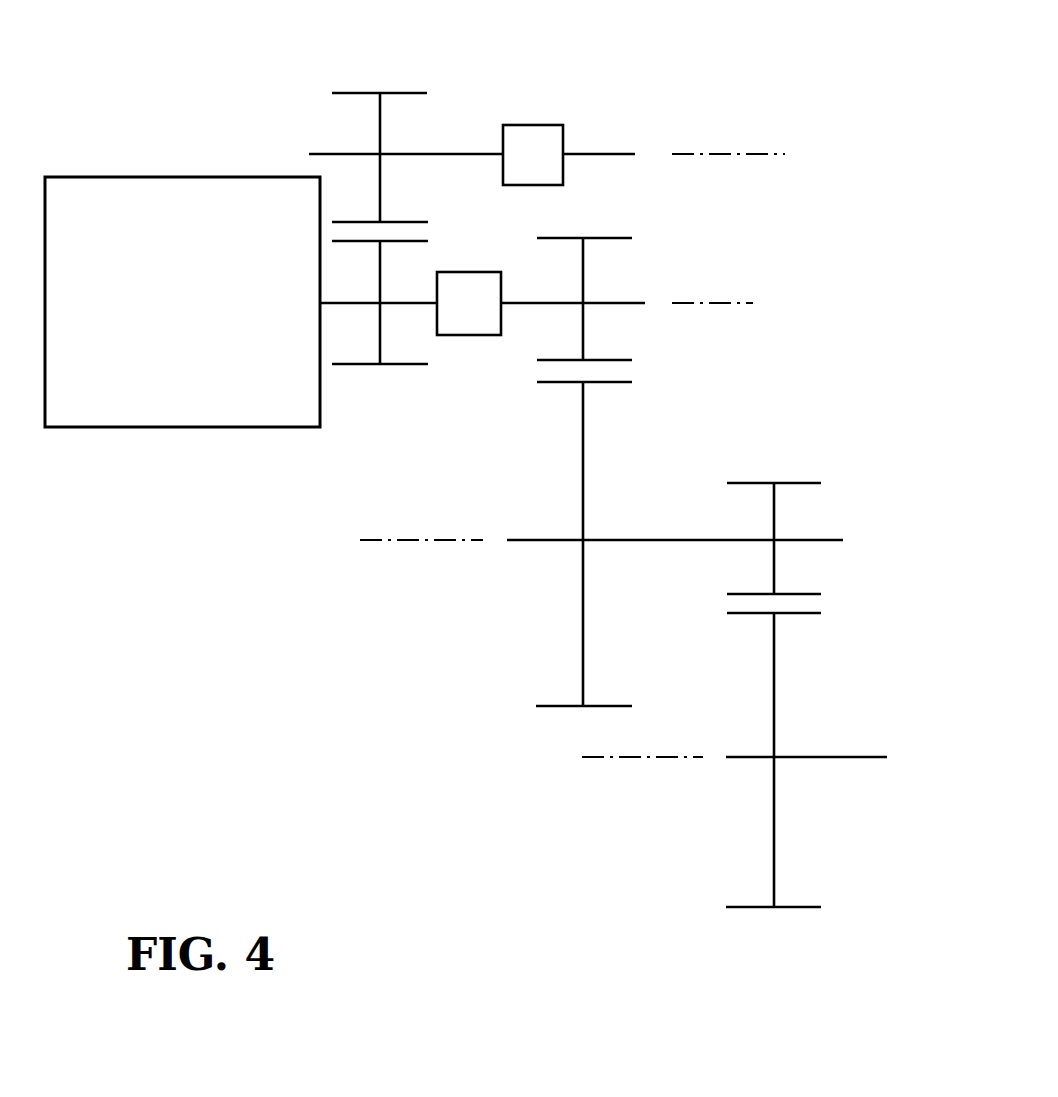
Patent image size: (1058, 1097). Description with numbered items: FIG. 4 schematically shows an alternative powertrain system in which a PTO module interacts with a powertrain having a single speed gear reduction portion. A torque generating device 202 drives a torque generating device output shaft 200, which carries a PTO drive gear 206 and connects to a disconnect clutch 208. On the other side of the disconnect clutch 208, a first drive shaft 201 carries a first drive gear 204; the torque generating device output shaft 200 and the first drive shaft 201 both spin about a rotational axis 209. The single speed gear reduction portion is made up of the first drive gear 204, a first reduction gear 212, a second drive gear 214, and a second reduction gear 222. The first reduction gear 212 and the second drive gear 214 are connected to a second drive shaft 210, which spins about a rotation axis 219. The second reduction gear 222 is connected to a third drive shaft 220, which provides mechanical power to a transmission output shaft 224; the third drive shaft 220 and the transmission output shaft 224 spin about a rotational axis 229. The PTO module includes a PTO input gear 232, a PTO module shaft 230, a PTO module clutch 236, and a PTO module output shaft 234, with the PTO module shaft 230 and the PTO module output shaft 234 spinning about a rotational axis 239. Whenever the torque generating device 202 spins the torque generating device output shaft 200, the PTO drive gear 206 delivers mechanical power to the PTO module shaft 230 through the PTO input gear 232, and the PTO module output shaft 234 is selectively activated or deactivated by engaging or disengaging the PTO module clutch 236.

The torque generating device output shaft 200 is at (396, 303).
The first drive shaft 201 is at (618, 303).
The torque generating device 202 is at (130, 177).
The first drive gear 204 is at (596, 238).
The PTO drive gear 206 is at (365, 364).
The disconnect clutch 208 is at (487, 335).
The rotational axis 209 is at (722, 303).
The second drive shaft 210 is at (823, 540).
The first reduction gear 212 is at (556, 706).
The second drive gear 214 is at (790, 483).
The rotation axis 219 is at (410, 540).
The third drive shaft 220 is at (795, 757).
The second reduction gear 222 is at (793, 907).
The transmission output shaft 224 is at (848, 757).
The rotational axis 229 is at (668, 757).
The PTO module shaft 230 is at (312, 154).
The PTO input gear 232 is at (400, 93).
The PTO module output shaft 234 is at (578, 154).
The PTO module clutch 236 is at (526, 125).
The rotational axis 239 is at (755, 154).